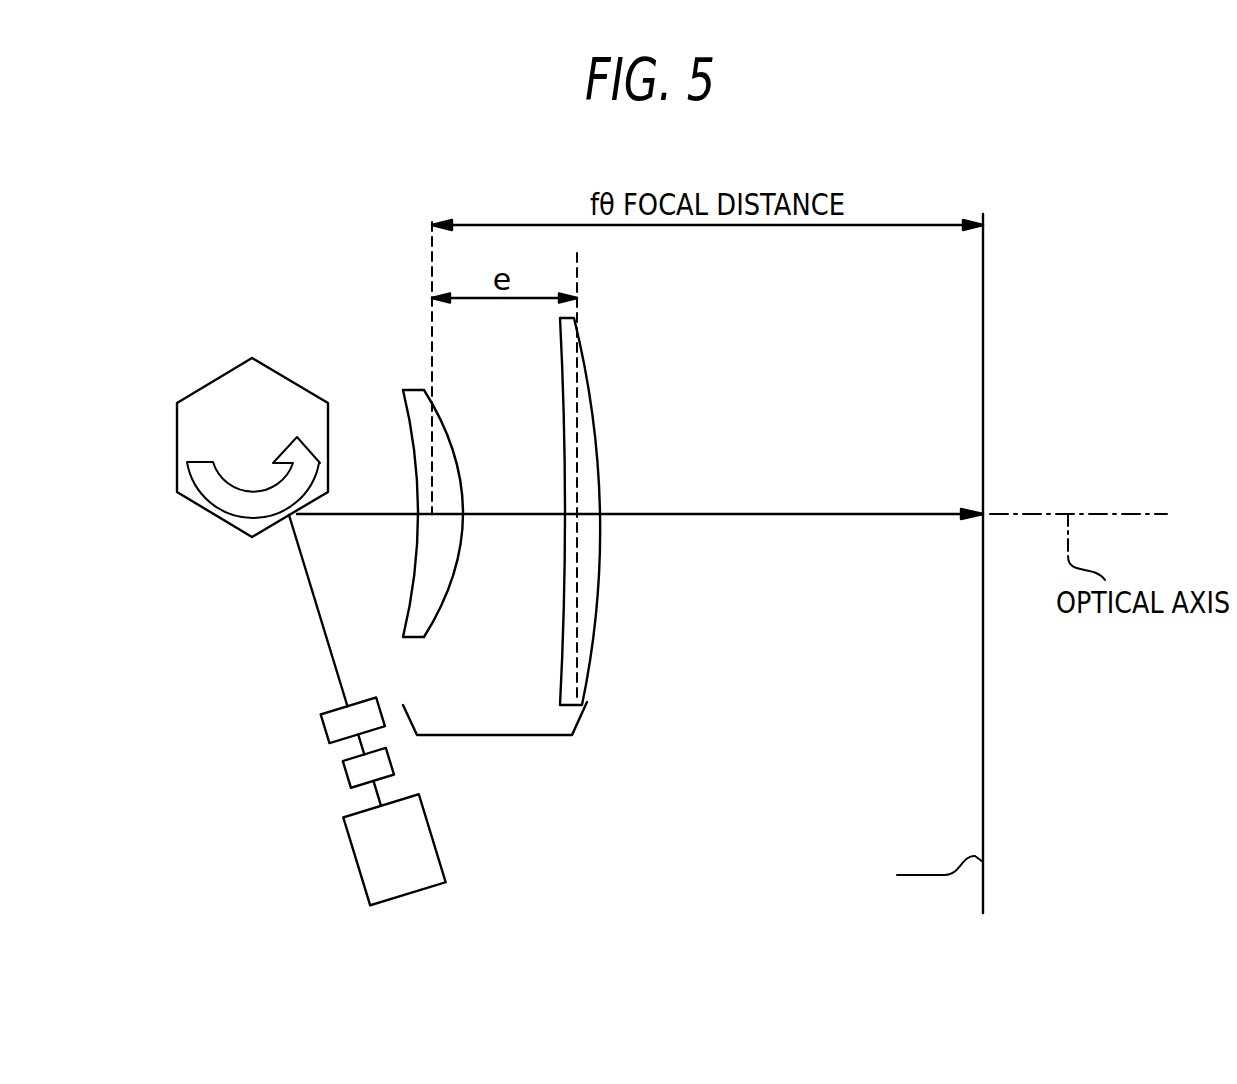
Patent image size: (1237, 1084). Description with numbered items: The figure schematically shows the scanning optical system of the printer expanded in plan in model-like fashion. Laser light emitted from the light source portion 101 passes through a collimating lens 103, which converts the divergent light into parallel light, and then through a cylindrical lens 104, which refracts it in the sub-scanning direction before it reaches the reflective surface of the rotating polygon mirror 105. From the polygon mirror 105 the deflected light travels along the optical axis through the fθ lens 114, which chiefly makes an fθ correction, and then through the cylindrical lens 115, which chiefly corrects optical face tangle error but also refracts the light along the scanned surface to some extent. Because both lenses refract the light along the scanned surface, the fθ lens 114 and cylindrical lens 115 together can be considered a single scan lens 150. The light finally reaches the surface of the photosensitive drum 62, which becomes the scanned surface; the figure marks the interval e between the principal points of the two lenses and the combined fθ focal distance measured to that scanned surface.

The light source portion 101 is at (348, 848).
The collimating lens 103 is at (353, 767).
The cylindrical lens 104 is at (325, 728).
The polygon mirror 105 is at (219, 378).
The fθ lens 114 is at (447, 460).
The cylindrical lens 115 is at (588, 430).
The scan lens 150 is at (480, 735).
The photosensitive drum 62 is at (983, 678).